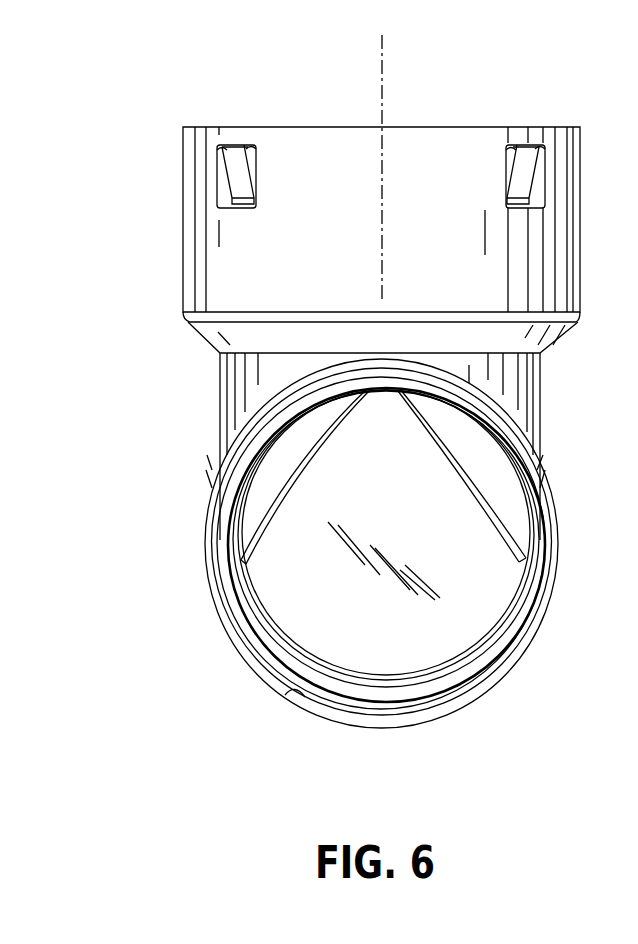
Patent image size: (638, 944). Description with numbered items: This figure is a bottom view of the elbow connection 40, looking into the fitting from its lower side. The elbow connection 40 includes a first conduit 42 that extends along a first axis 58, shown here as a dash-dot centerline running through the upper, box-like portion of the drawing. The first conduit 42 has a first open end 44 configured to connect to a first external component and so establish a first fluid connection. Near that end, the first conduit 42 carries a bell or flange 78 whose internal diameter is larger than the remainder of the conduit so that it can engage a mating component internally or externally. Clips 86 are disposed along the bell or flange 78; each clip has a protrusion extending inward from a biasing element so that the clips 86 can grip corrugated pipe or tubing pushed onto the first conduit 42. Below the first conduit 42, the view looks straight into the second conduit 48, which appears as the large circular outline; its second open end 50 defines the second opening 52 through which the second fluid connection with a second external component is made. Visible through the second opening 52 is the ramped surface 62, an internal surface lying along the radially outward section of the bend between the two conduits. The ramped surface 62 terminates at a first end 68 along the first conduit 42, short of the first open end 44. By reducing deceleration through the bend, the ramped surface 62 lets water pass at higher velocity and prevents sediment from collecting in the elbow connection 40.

The elbow connection 40 is at (124, 86).
The first conduit 42 is at (518, 374).
The first open end 44 is at (535, 127).
The second conduit 48 is at (545, 603).
The second open end 50 is at (243, 658).
The second opening 52 is at (285, 690).
The first axis 58 is at (382, 70).
The ramped surface 62 is at (447, 545).
The first end 68 is at (392, 388).
The bell or flange 78 is at (207, 245).
The clips 86 is at (237, 167).